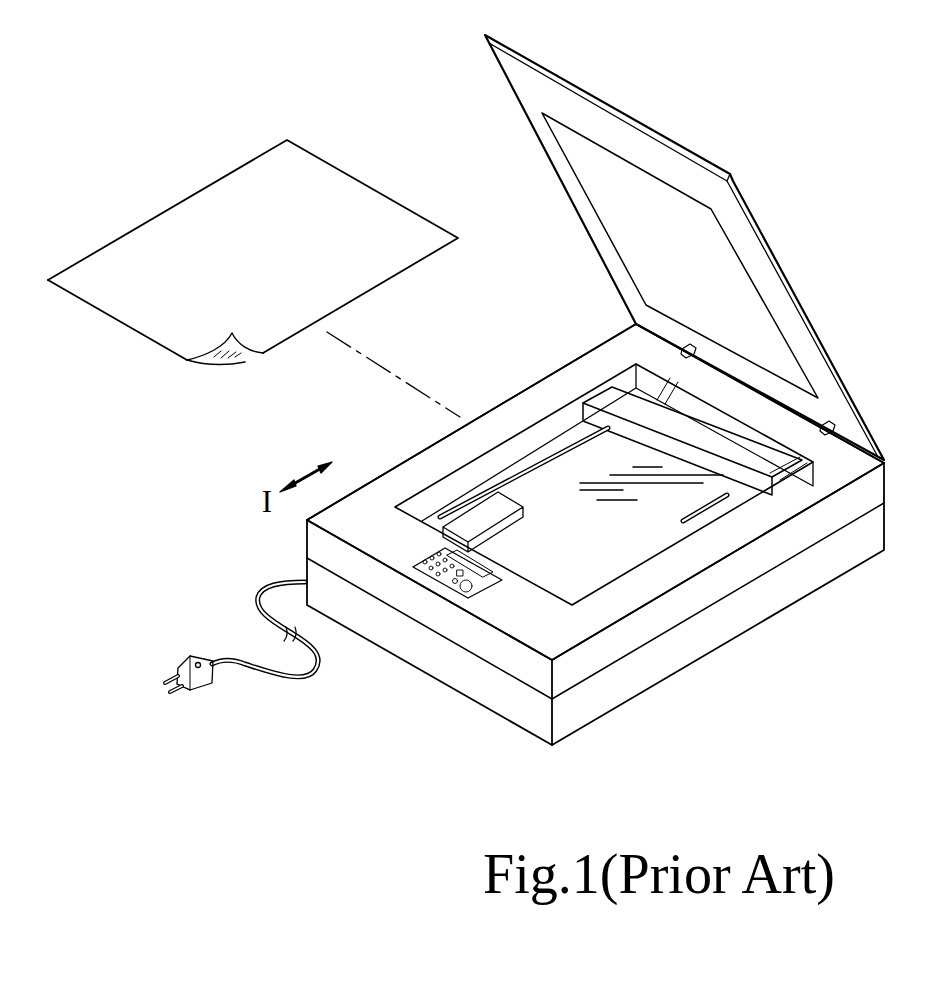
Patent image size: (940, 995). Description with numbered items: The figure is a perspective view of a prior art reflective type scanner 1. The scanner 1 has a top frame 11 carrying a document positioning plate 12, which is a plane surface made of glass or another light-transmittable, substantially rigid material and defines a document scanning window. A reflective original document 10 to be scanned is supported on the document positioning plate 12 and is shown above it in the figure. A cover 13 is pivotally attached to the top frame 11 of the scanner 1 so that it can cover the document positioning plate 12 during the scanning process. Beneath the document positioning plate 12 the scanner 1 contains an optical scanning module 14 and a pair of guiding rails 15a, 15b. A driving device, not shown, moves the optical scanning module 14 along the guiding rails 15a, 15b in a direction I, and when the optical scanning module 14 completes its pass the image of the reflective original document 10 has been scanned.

The scanner 1 is at (447, 665).
The reflective original document 10 is at (223, 205).
The top frame 11 is at (822, 482).
The document positioning plate 12 is at (572, 550).
The cover 13 is at (792, 283).
The optical scanning module 14 is at (762, 485).
The guiding rail 15a is at (567, 447).
The guiding rail 15b is at (685, 522).